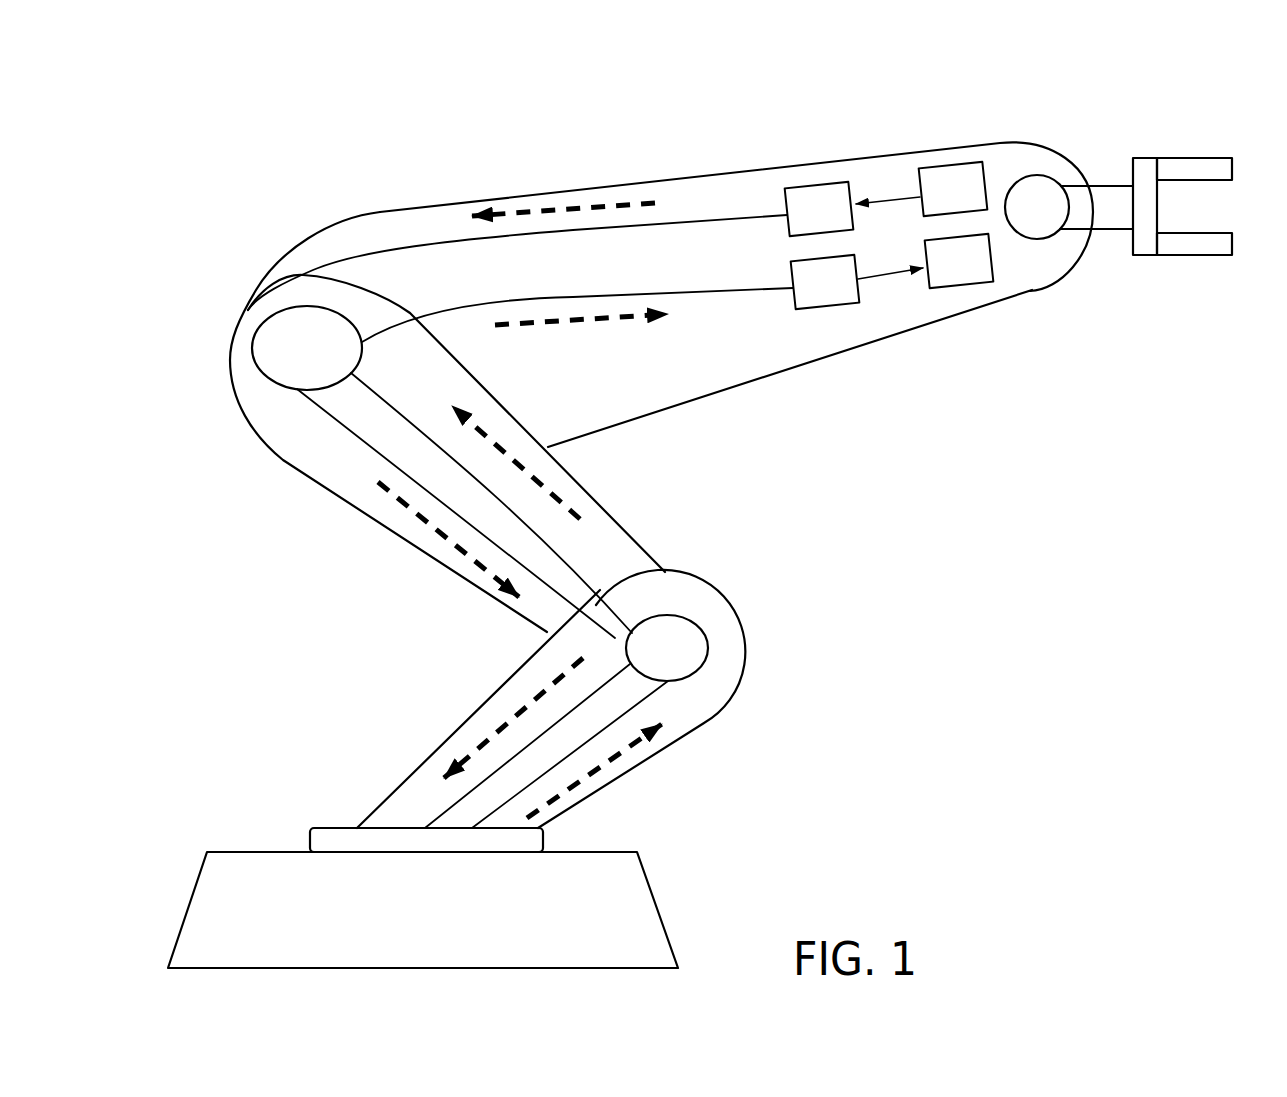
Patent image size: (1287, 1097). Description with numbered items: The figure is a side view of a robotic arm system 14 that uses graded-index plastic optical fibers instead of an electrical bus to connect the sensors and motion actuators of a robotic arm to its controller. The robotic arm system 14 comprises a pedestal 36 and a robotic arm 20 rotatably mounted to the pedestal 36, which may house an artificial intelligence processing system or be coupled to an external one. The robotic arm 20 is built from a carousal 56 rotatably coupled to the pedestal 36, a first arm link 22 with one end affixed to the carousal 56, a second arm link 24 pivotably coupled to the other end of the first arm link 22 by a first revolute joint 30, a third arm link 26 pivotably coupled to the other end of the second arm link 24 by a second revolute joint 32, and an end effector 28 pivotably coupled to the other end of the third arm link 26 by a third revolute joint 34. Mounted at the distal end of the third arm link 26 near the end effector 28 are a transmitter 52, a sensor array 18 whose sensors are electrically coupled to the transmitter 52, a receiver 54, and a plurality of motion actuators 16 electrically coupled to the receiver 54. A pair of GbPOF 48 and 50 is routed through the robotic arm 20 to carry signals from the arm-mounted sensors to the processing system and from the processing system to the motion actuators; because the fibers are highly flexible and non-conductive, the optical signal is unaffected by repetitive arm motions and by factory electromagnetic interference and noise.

The robotic arm system 14 is at (703, 510).
The motion actuators 16 is at (992, 260).
The sensor array 18 is at (965, 162).
The robotic arm 20 is at (744, 262).
The first arm link 22 is at (588, 686).
The second arm link 24 is at (416, 425).
The third arm link 26 is at (700, 393).
The end effector 28 is at (1202, 158).
The first revolute joint 30 is at (682, 617).
The second revolute joint 32 is at (255, 342).
The third revolute joint 34 is at (1061, 185).
The pedestal 36 is at (653, 890).
The GbPOF 48 is at (732, 215).
The GbPOF 50 is at (732, 292).
The transmitter 52 is at (823, 185).
The receiver 54 is at (830, 307).
The carousal 56 is at (308, 843).